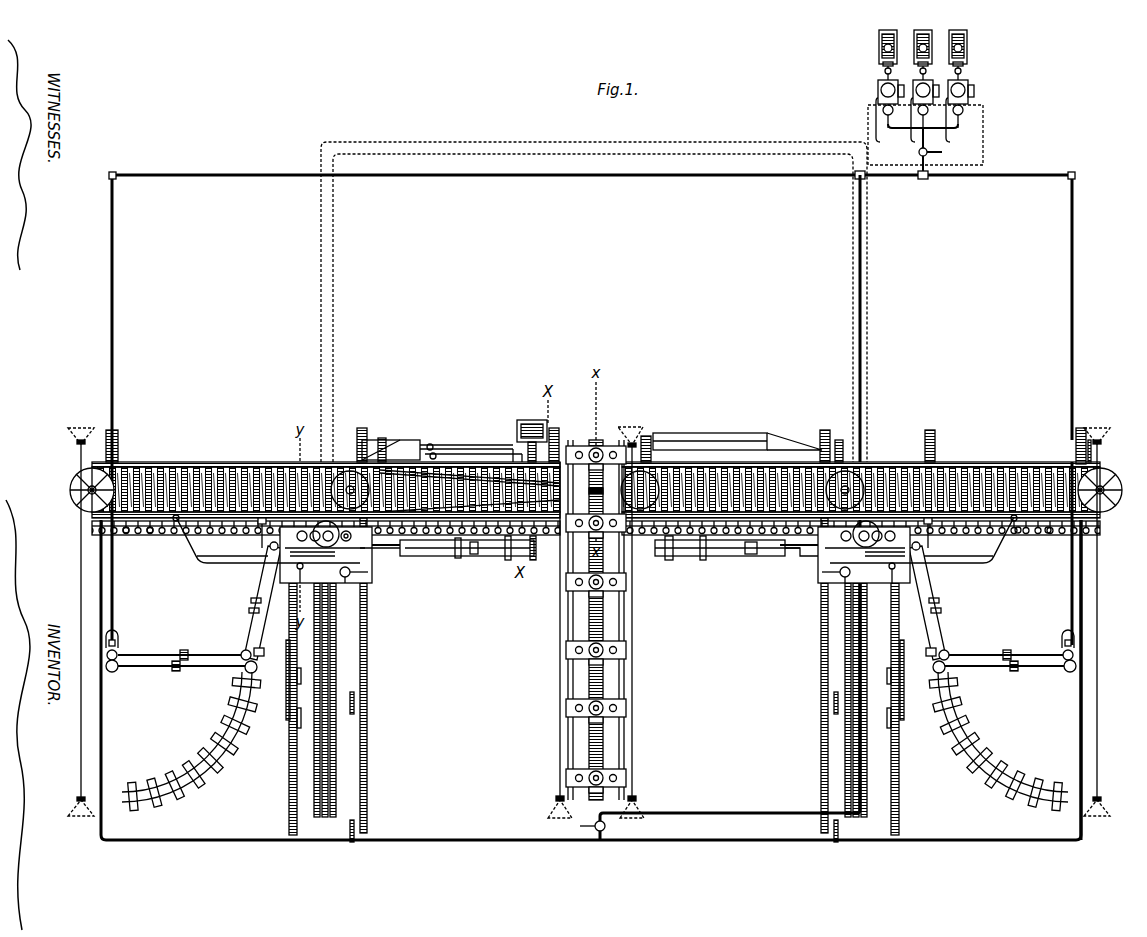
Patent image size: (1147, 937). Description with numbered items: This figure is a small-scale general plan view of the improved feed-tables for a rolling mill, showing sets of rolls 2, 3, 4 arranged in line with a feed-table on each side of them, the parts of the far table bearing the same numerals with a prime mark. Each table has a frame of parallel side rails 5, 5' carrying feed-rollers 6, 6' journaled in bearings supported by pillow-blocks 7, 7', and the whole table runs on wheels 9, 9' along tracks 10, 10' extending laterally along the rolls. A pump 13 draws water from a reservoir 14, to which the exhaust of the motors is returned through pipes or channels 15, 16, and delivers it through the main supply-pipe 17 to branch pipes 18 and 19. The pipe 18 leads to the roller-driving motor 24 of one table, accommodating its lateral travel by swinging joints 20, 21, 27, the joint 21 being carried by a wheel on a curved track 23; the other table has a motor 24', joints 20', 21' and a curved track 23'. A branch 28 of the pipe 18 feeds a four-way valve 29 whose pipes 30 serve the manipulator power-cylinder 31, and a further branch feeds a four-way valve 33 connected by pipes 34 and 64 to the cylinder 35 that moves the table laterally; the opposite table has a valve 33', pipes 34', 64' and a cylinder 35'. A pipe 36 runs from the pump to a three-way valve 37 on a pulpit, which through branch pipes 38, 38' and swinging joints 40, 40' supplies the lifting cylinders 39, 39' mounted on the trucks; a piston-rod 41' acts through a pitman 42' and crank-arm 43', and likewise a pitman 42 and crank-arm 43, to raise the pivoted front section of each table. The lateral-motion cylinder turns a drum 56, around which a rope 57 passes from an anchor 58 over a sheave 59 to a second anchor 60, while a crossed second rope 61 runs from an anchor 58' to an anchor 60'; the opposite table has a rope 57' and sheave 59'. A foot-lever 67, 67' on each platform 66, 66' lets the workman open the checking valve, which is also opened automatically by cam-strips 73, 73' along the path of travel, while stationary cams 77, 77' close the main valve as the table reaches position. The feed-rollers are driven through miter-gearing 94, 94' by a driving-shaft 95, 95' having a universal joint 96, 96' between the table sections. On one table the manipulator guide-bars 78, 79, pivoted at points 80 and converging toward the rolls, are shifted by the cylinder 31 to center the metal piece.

The set of rolls 2 is at (598, 448).
The set of rolls 3 is at (556, 630).
The set of rolls 4 is at (591, 622).
The side rails 5 is at (326, 477).
The side rails 5' is at (861, 477).
The feed-rollers 6 is at (311, 513).
The feed-rollers 6' is at (861, 490).
The pillow-blocks 7 is at (326, 480).
The pillow-blocks 7' is at (861, 480).
The wheels 9 is at (443, 439).
The wheels 9' is at (1101, 446).
The tracks 10 is at (230, 675).
The tracks 10' is at (963, 675).
The pump 13 is at (916, 79).
The reservoir 14 is at (984, 153).
The pipes or channels 15 is at (745, 141).
The pipes or channels 16 is at (856, 165).
The main supply-pipe 17 is at (918, 155).
The branch pipe 18 is at (512, 177).
The branch pipe 19 is at (962, 177).
The swinging joint 20 is at (178, 678).
The swinging joint 20' is at (1007, 678).
The swinging joint 21 is at (261, 679).
The swinging joint 21' is at (925, 680).
The curved track 23 is at (192, 741).
The curved track 23' is at (998, 741).
The roller-driving motor 24 is at (358, 532).
The roller-driving motor 24' is at (828, 532).
The swinging joint 27 is at (263, 545).
The branch pipe 28 is at (390, 439).
The four-way valve 29 is at (432, 445).
The pipes 30 is at (530, 430).
The power-cylinder 31 is at (554, 427).
The four-way valve 33 is at (354, 588).
The four-way valve 33' is at (836, 588).
The pipe 34 is at (232, 552).
The pipe 34' is at (958, 550).
The cylinder 35 is at (195, 530).
The cylinder 35' is at (991, 532).
The pipe 36 is at (858, 362).
The three-way valve 37 is at (602, 827).
The branch pipe 38 is at (591, 680).
The branch pipe 38' is at (907, 680).
The lifting cylinder 39 is at (446, 554).
The lifting cylinder 39' is at (787, 559).
The swinging joint 40 is at (189, 589).
The swinging joint 40' is at (993, 589).
The piston-rod 41' is at (737, 499).
The pitman 42 is at (447, 552).
The pitman 42' is at (699, 550).
The crank-arm 43 is at (507, 551).
The crank-arm 43' is at (669, 550).
The drum 56 is at (363, 445).
The cable or rope 57 is at (68, 621).
The cable or rope 57' is at (1109, 622).
The post or anchor 58 is at (78, 817).
The anchor 58' is at (596, 816).
The sheave 59 is at (85, 490).
The sheave 59' is at (1106, 490).
The post or anchor 60 is at (81, 423).
The anchor 60' is at (608, 423).
The second rope 61 is at (560, 690).
The pipe 64 is at (268, 550).
The pipe 64' is at (922, 552).
The platform 66 is at (326, 552).
The platform 66' is at (864, 553).
The foot-lever 67 is at (305, 586).
The foot-lever 67' is at (889, 586).
The cam-strips 73 is at (276, 680).
The cam-strips 73' is at (917, 680).
The stationary cams 77 is at (374, 767).
The stationary cams 77' is at (815, 767).
The guide-bar 78 is at (531, 551).
The guide-bar 79 is at (490, 454).
The pivot points 80 is at (470, 446).
The miter-gearing 94 is at (149, 538).
The miter-gearing 94' is at (1047, 538).
The driving-shaft 95 is at (124, 536).
The driving-shaft 95' is at (1017, 536).
The universal joint 96 is at (391, 534).
The universal joint 96' is at (799, 534).